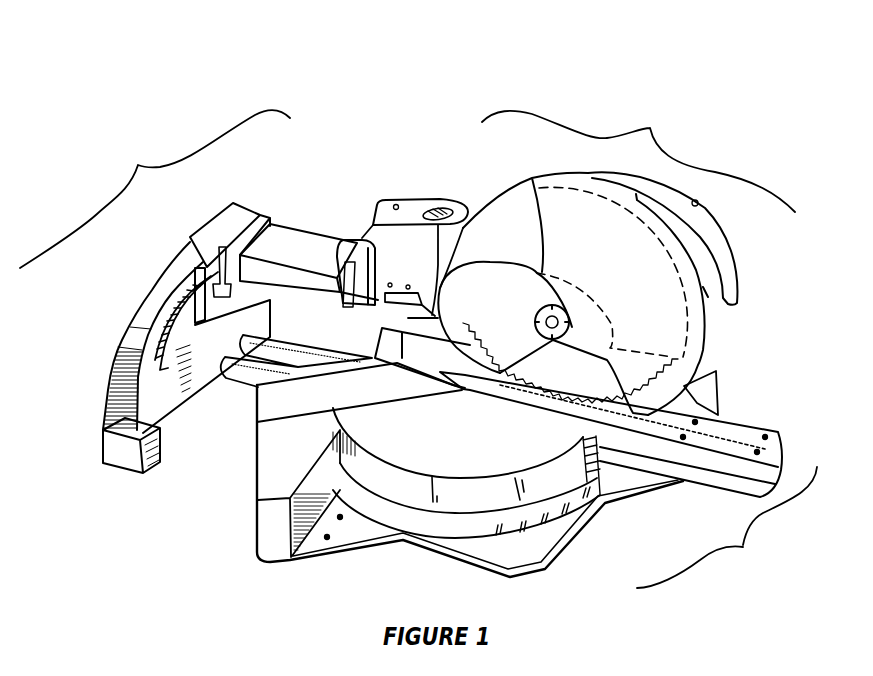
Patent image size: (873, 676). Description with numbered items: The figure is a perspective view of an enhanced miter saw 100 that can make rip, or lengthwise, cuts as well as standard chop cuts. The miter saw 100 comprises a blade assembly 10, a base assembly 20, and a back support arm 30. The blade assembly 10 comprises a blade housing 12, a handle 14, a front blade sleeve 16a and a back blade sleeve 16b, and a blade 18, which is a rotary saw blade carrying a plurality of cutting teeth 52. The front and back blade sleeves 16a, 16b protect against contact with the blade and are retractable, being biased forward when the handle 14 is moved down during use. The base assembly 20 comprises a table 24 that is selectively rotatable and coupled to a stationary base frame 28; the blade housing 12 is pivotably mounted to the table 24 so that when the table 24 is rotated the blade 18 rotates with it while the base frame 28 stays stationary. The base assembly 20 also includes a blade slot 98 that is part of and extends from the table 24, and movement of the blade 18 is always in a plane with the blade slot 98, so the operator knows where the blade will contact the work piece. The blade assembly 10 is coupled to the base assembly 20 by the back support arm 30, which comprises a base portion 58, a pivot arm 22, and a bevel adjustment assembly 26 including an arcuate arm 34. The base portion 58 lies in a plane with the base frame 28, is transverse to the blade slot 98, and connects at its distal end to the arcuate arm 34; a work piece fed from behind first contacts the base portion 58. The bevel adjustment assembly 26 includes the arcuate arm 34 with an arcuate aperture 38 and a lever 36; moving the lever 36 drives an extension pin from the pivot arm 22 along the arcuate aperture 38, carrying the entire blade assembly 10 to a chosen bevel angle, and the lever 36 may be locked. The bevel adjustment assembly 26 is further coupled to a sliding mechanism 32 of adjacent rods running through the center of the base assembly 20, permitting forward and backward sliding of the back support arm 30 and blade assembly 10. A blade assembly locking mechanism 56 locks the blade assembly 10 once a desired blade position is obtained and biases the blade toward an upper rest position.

The miter saw 100 is at (363, 89).
The blade assembly 10 is at (638, 157).
The blade housing 12 is at (407, 210).
The handle 14 is at (704, 228).
The front blade sleeve 16a is at (697, 320).
The back blade sleeve 16b is at (473, 277).
The blade 18 is at (572, 380).
The base assembly 20 is at (727, 527).
The pivot arm 22 is at (293, 240).
The table 24 is at (418, 437).
The bevel adjustment assembly 26 is at (233, 218).
The base frame 28 is at (517, 560).
The back support arm 30 is at (155, 189).
The sliding mechanism 32 is at (250, 378).
The arcuate arm 34 is at (130, 373).
The lever 36 is at (219, 250).
The arcuate aperture 38 is at (170, 297).
The cutting teeth 52 is at (730, 393).
The blade assembly locking mechanism 56 is at (373, 248).
The base portion 58 is at (123, 457).
The blade slot 98 is at (747, 440).